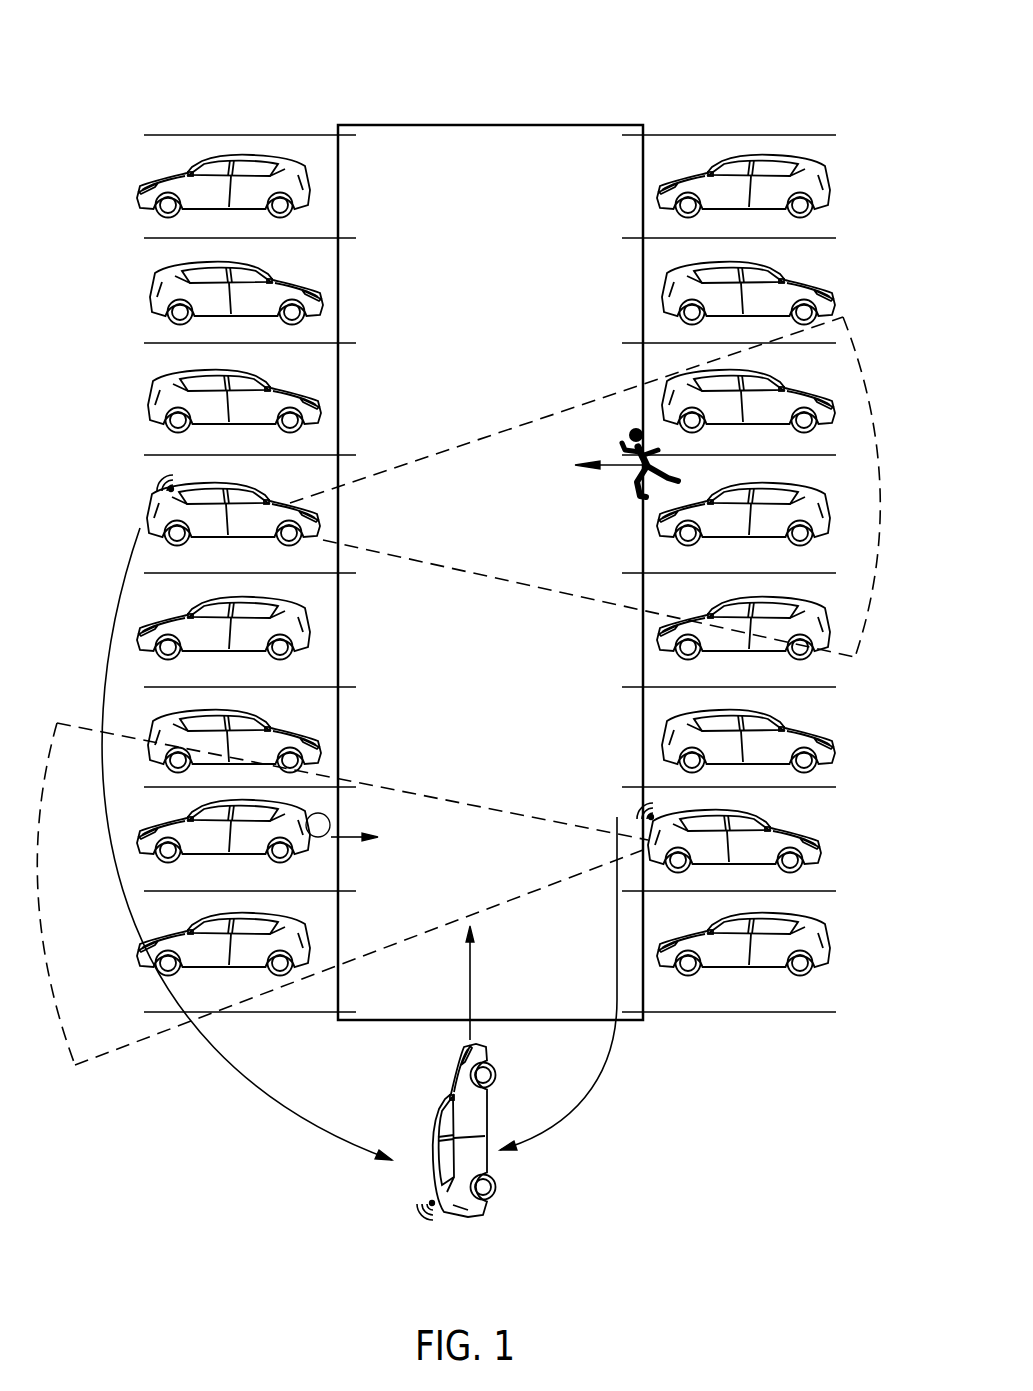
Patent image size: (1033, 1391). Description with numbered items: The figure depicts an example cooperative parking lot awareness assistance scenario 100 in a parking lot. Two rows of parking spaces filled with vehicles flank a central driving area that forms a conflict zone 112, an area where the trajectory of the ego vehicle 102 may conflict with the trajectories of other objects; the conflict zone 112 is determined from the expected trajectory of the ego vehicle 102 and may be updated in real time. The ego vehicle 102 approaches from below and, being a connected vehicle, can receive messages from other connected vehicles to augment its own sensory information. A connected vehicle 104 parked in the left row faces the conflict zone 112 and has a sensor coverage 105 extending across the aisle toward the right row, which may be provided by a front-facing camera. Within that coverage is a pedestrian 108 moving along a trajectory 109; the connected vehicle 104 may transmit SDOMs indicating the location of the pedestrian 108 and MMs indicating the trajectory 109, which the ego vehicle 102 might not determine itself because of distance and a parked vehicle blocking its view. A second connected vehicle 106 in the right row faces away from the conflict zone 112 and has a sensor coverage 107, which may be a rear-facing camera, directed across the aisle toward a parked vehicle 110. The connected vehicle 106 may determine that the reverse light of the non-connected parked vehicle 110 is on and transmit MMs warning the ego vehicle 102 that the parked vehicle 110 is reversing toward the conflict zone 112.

The cooperative parking lot awareness assistance scenario 100 is at (484, 510).
The ego vehicle 102 is at (494, 1118).
The connected vehicle 104 is at (151, 527).
The sensor coverage 105 is at (873, 588).
The connected vehicle 106 is at (823, 840).
The sensor coverage 107 is at (70, 1048).
The pedestrian 108 is at (633, 425).
The trajectory 109 is at (590, 470).
The parked vehicle 110 is at (134, 842).
The conflict zone 112 is at (492, 260).